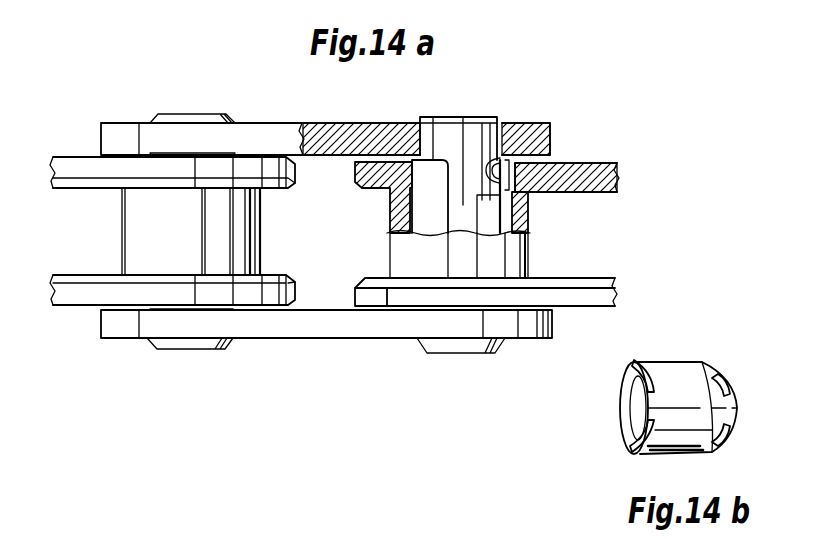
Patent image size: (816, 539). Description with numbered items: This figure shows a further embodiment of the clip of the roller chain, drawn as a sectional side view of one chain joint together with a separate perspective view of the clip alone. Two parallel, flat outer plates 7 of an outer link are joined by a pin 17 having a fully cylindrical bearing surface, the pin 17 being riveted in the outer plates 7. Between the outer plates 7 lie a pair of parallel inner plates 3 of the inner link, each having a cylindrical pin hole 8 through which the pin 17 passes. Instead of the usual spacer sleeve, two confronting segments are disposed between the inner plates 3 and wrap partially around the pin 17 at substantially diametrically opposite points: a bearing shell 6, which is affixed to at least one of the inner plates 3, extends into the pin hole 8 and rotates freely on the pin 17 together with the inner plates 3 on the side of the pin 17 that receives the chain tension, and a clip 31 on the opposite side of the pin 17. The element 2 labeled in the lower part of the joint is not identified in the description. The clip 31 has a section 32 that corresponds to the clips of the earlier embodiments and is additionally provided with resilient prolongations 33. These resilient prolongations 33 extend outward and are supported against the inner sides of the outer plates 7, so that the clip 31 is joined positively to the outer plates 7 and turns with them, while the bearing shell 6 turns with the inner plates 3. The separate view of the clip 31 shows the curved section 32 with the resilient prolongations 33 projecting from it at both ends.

In FIG. 14A, the pin 2 is at (410, 255).
In FIG. 14A, the inner plate 3 is at (582, 172).
In FIG. 14A, the bearing shell 6 is at (435, 203).
In FIG. 14A, the outer plate 7 is at (344, 137).
In FIG. 14A, the pin hole 8 is at (525, 182).
In FIG. 14A, the pin 17 is at (470, 137).
In FIG. 14A, the clip 31 is at (520, 226).
In FIG. 14B, the clip 31 is at (678, 383).
In FIG. 14B, the section 32 is at (681, 385).
In FIG. 14B, the resilient prolongation 33 is at (708, 446).